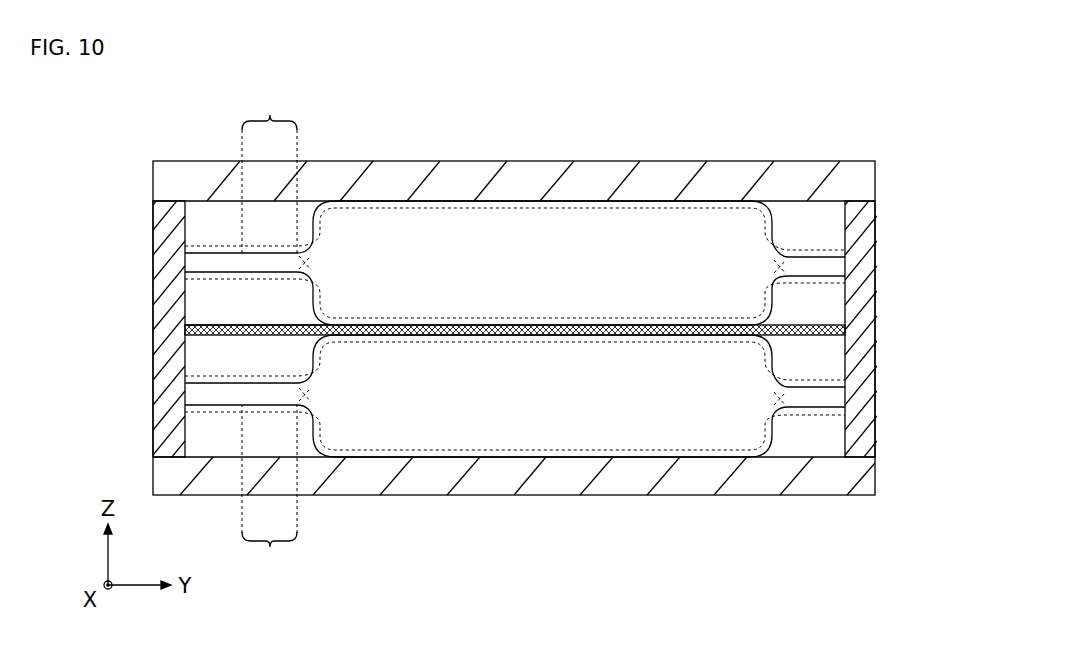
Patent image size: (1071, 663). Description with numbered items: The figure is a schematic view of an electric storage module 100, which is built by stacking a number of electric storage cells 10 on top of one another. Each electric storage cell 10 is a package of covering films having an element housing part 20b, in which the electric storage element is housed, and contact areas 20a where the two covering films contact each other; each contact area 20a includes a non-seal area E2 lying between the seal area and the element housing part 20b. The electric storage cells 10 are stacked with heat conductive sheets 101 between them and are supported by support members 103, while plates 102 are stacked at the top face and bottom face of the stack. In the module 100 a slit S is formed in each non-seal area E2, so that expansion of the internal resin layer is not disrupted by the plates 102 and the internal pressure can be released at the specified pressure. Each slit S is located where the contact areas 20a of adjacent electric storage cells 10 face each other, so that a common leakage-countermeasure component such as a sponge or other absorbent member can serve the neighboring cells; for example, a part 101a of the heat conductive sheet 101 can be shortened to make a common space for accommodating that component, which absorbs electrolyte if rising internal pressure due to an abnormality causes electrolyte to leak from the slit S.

The electric storage module 100 is at (830, 148).
The electric storage cell 10 is at (386, 243).
The contact area 20a is at (185, 242).
The element housing part 20b is at (540, 320).
The heat conductive sheet 101 is at (830, 333).
The part of the heat conductive sheet 101a is at (215, 327).
The plate 102 is at (606, 176).
The support member 103 is at (185, 400).
The slit S is at (271, 269).
The non-seal area E2 is at (269, 332).